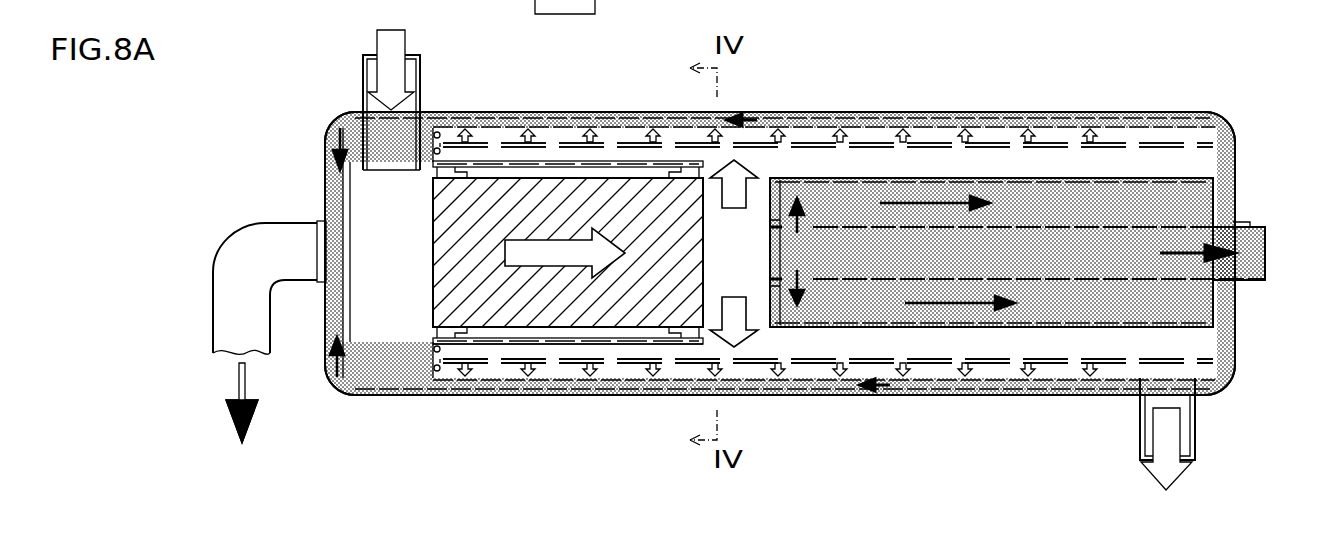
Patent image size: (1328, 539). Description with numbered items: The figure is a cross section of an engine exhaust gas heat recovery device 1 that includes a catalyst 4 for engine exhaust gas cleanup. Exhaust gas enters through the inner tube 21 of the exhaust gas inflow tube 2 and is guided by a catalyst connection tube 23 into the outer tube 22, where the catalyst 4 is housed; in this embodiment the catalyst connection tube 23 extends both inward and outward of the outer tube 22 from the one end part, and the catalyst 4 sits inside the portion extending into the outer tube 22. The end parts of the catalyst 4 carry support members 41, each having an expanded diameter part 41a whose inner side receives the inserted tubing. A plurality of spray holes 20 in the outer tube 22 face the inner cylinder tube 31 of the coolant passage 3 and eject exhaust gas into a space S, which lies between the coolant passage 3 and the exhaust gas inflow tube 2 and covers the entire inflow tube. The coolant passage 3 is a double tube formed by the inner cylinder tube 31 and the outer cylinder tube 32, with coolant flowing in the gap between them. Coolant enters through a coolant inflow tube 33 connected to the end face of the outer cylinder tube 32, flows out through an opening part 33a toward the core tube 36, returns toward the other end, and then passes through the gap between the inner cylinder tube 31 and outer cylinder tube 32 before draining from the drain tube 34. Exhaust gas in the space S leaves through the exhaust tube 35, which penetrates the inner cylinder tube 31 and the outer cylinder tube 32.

The engine exhaust gas heat recovery device 1 is at (241, 100).
The exhaust gas inflow tube 2 is at (678, 363).
The coolant passage 3 is at (945, 112).
The catalyst 4 is at (543, 187).
The spray holes 20 is at (592, 143).
The inner tube 21 is at (364, 76).
The outer tube 22 is at (552, 363).
The catalyst connection tube 23 is at (487, 344).
The inner cylinder tube 31 is at (1055, 118).
The outer cylinder tube 32 is at (1003, 113).
The coolant inflow tube 33 is at (1253, 227).
The opening part 33a is at (836, 280).
The drain tube 34 is at (213, 318).
The exhaust tube 35 is at (1197, 436).
The core tube 36 is at (1178, 180).
The support member 41 is at (486, 163).
The expanded diameter part 41a is at (440, 163).
The space S is at (1148, 138).